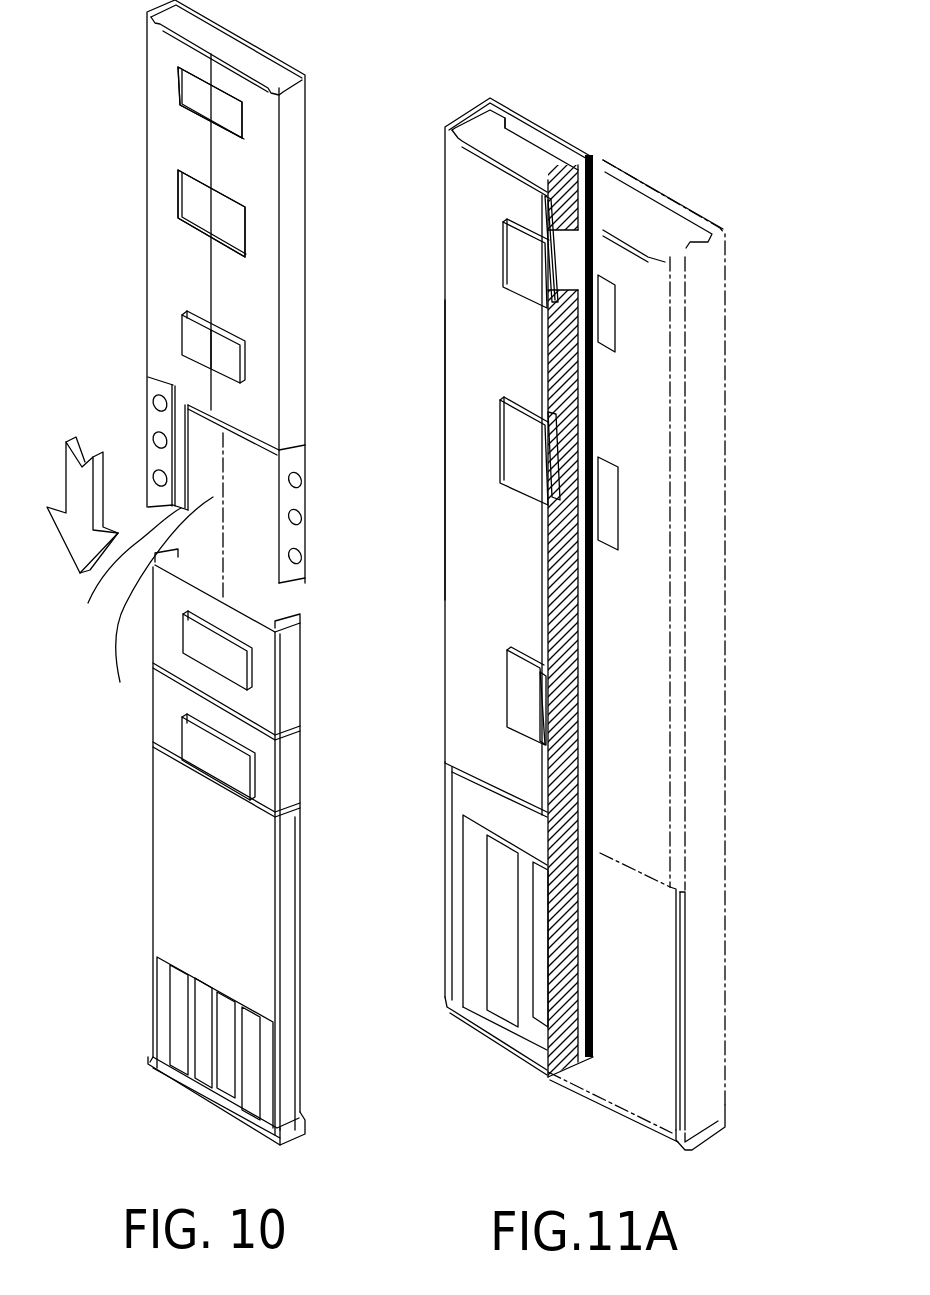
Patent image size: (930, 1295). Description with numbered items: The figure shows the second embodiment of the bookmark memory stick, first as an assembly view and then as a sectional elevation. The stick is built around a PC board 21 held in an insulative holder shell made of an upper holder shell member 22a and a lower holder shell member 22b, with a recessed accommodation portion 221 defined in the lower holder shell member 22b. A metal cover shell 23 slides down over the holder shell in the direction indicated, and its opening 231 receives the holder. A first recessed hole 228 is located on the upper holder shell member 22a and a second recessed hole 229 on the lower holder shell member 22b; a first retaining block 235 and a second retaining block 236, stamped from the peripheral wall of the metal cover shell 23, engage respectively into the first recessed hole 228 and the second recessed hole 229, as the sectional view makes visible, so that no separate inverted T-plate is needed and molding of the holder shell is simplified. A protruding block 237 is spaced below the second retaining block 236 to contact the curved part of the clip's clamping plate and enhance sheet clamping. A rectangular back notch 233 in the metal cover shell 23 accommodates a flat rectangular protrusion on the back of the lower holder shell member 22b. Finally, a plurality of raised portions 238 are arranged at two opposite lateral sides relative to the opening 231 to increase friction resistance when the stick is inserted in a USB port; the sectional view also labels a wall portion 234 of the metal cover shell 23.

In FIG. 10, the PC board 21 is at (158, 888).
In FIG. 11A, the PC board 21 is at (557, 787).
In FIG. 10, the upper holder shell member 22a is at (287, 679).
In FIG. 11A, the upper holder shell member 22a is at (565, 317).
In FIG. 10, the lower holder shell member 22b is at (292, 767).
In FIG. 11A, the lower holder shell member 22b is at (575, 420).
In FIG. 10, the metal cover shell 23 is at (146, 178).
In FIG. 11A, the metal cover shell 23 is at (563, 143).
In FIG. 10, the recessed accommodation portion 221 is at (300, 1000).
In FIG. 11A, the recessed accommodation portion 221 is at (570, 915).
In FIG. 11A, the first recessed hole 228 is at (583, 258).
In FIG. 11A, the second recessed hole 229 is at (555, 485).
In FIG. 10, the opening 231 is at (118, 573).
In FIG. 10, the rectangular back notch 233 is at (144, 603).
In FIG. 11A, the cap side wall 234 is at (466, 322).
In FIG. 10, the first retaining block 235 is at (188, 88).
In FIG. 11A, the first retaining block 235 is at (523, 260).
In FIG. 10, the second retaining block 236 is at (198, 203).
In FIG. 11A, the second retaining block 236 is at (523, 455).
In FIG. 10, the protruding block 237 is at (196, 344).
In FIG. 11A, the protruding block 237 is at (523, 688).
In FIG. 10, the raised portions 238 is at (151, 472).